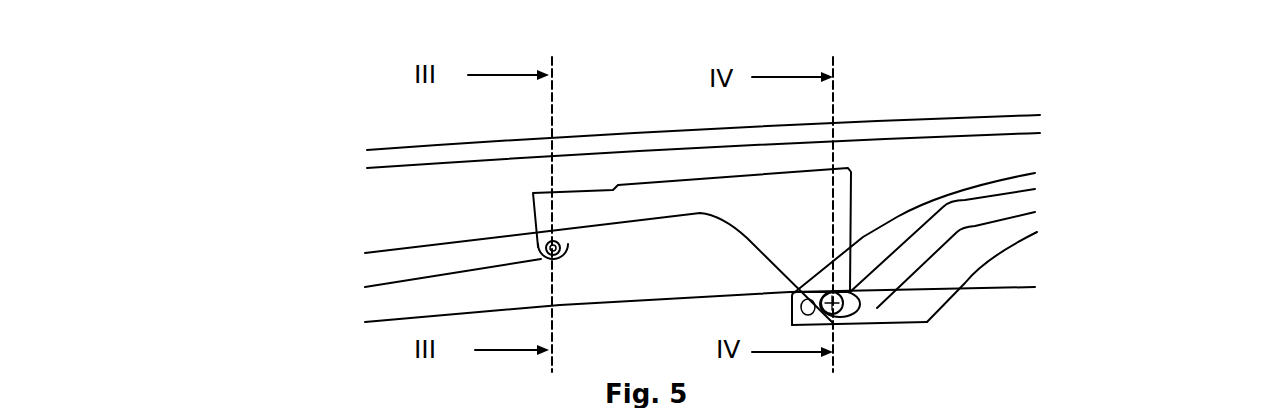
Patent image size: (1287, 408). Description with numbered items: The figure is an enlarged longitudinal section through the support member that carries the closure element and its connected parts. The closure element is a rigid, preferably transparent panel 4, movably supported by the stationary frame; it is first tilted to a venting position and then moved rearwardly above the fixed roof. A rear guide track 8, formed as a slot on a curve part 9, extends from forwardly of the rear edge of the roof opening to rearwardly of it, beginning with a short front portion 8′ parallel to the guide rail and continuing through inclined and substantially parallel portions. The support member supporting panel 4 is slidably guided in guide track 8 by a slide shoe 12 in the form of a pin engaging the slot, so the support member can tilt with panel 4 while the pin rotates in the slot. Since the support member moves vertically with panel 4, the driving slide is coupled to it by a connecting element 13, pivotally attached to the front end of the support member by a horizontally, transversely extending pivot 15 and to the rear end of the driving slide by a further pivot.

The panel 4 is at (982, 123).
The connecting element 13 is at (407, 255).
The pivot 15 is at (553, 248).
The rear guide track 8 is at (1046, 191).
The front portion of guide track 8′ is at (833, 323).
The curve part 9 is at (980, 247).
The slide shoe 12 is at (823, 303).